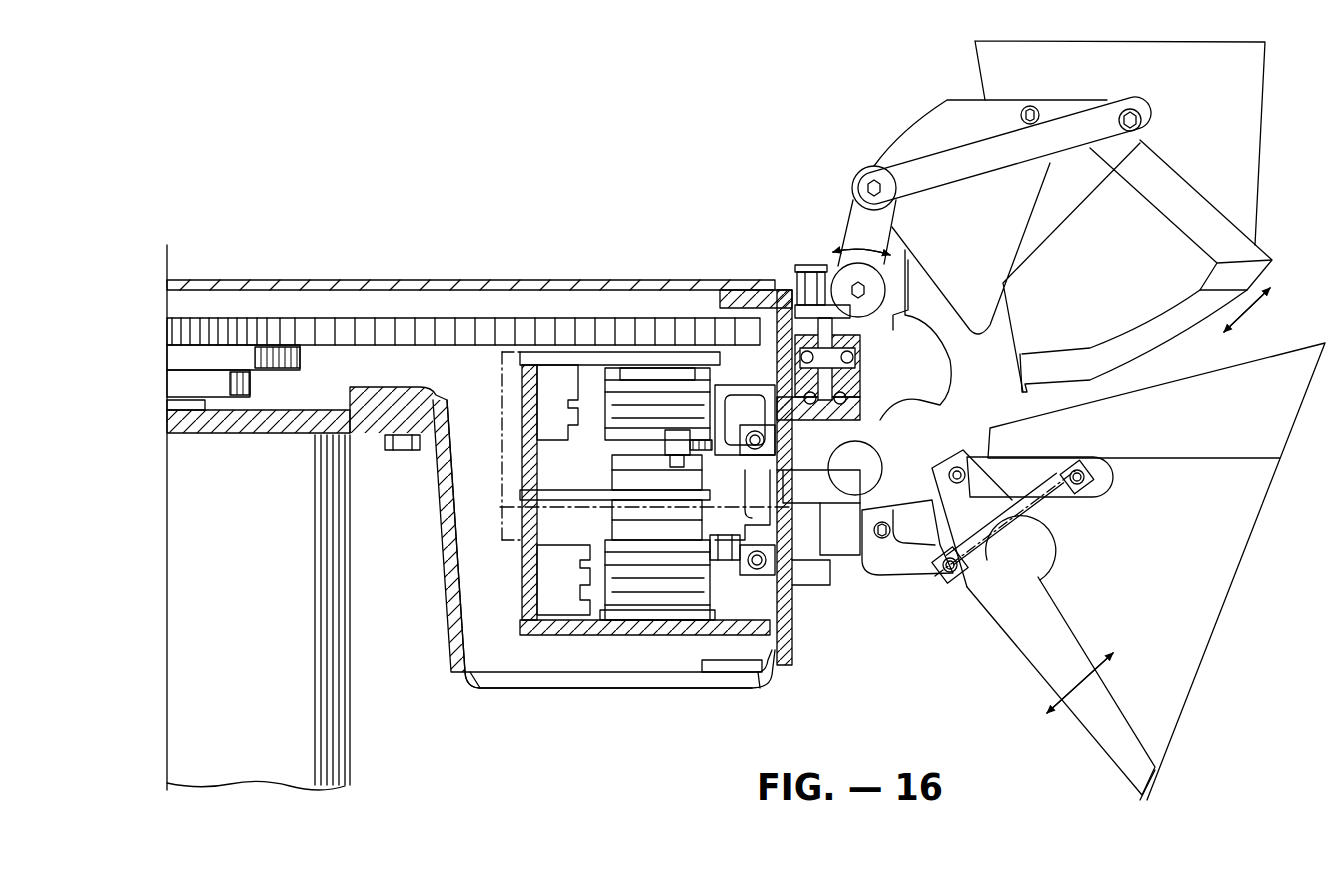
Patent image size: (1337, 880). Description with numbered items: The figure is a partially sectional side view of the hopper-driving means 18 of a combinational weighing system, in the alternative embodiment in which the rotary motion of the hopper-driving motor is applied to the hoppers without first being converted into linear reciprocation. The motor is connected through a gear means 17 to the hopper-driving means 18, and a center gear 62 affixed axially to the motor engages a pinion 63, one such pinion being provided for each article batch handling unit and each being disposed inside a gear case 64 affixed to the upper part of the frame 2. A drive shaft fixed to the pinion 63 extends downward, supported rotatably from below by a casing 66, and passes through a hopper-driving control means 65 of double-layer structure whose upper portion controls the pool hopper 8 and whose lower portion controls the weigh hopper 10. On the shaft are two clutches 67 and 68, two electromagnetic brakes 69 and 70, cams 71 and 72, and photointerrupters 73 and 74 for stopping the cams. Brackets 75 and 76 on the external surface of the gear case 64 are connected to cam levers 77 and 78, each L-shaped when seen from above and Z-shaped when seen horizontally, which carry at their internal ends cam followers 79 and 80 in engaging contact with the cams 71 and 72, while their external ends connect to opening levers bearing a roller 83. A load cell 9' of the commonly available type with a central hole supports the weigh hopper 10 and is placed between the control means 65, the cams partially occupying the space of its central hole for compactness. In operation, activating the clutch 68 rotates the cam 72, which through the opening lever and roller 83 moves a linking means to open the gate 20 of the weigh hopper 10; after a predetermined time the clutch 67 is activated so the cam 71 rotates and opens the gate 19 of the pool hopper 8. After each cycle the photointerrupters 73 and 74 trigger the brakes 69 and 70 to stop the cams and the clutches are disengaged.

The frame 2 is at (180, 286).
The pool hopper 8 is at (1265, 117).
The load cell 9' is at (731, 712).
The weigh hopper 10 is at (1278, 478).
The gear means 17 is at (170, 122).
The hopper-driving means 18 is at (320, 772).
The gate 19 is at (1257, 247).
The gate 20 is at (1107, 725).
The center gear 62 is at (362, 416).
The pinion 63 is at (690, 320).
The gear case 64 is at (493, 680).
The hopper-driving control means 65 is at (548, 470).
The casing 66 is at (622, 628).
The clutch 67 is at (668, 430).
The clutch 68 is at (745, 685).
The electromagnetic brake 69 is at (625, 445).
The electromagnetic brake 70 is at (640, 624).
The cam 71 is at (577, 440).
The cam 72 is at (575, 528).
The photointerrupter 73 is at (558, 440).
The photointerrupter 74 is at (578, 637).
The bracket 75 is at (935, 372).
The bracket 76 is at (815, 566).
The cam lever 77 is at (742, 388).
The cam lever 78 is at (790, 565).
The cam follower 79 is at (652, 440).
The cam follower 80 is at (790, 590).
The roller 83 is at (810, 265).